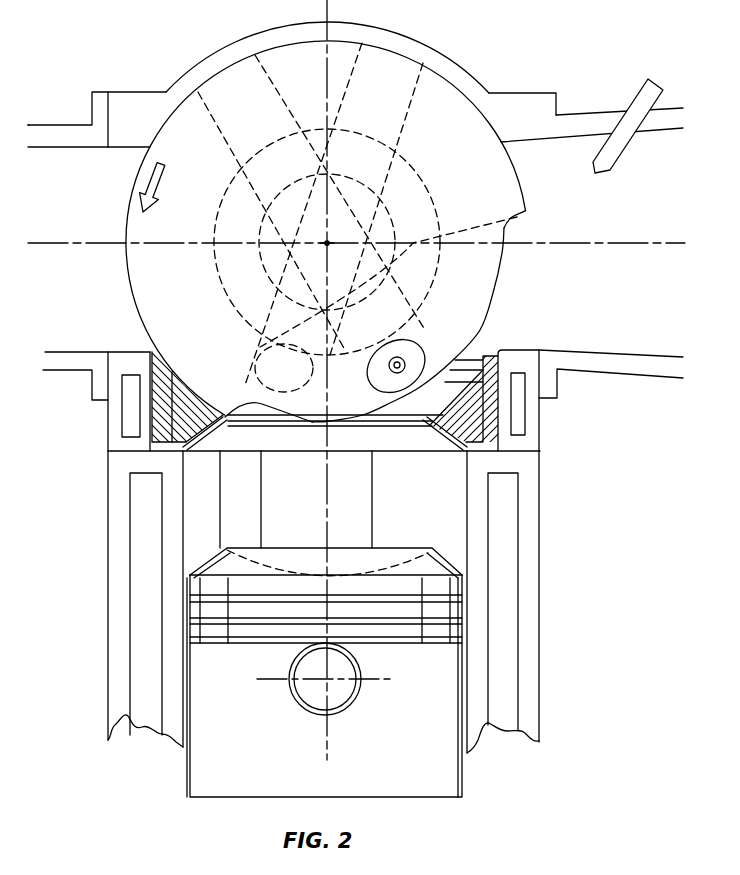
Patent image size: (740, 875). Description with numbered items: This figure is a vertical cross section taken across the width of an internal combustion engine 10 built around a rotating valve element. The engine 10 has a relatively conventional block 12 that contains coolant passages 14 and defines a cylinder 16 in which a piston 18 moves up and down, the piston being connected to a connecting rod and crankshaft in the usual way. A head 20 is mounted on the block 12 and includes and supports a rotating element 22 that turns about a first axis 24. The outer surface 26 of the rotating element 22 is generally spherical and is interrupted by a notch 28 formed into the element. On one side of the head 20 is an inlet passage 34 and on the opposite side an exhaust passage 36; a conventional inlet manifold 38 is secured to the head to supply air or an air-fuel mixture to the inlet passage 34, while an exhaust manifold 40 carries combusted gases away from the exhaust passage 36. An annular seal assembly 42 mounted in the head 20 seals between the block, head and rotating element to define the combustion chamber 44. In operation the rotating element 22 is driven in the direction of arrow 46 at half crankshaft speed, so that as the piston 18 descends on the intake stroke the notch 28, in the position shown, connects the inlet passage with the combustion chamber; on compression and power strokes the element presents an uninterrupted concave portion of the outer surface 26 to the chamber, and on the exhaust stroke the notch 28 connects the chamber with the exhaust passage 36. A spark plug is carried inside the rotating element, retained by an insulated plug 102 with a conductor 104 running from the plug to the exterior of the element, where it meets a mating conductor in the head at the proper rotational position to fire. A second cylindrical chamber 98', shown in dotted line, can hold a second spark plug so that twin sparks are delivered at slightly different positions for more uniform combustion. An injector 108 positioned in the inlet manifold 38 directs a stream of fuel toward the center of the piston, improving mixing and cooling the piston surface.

The internal combustion engine 10 is at (66, 439).
The block 12 is at (112, 540).
The coolant passages 14 is at (157, 552).
The cylinder 16 is at (390, 520).
The piston 18 is at (220, 560).
The head 20 is at (487, 75).
The rotating element 22 is at (118, 215).
The first axis 24 is at (332, 242).
The outer surface 26 is at (126, 262).
The notch 28 is at (481, 284).
The inlet passage 34 is at (529, 350).
The exhaust passage 36 is at (120, 352).
The inlet manifold 38 is at (659, 214).
The exhaust manifold 40 is at (56, 199).
The annular seal assembly 42 is at (435, 449).
The combustion chamber 44 is at (293, 523).
The arrow 46 is at (165, 172).
The cylindrical chamber 98' is at (247, 368).
The insulated plug 102 is at (426, 362).
The conductor 104 is at (390, 373).
The injector 108 is at (637, 93).